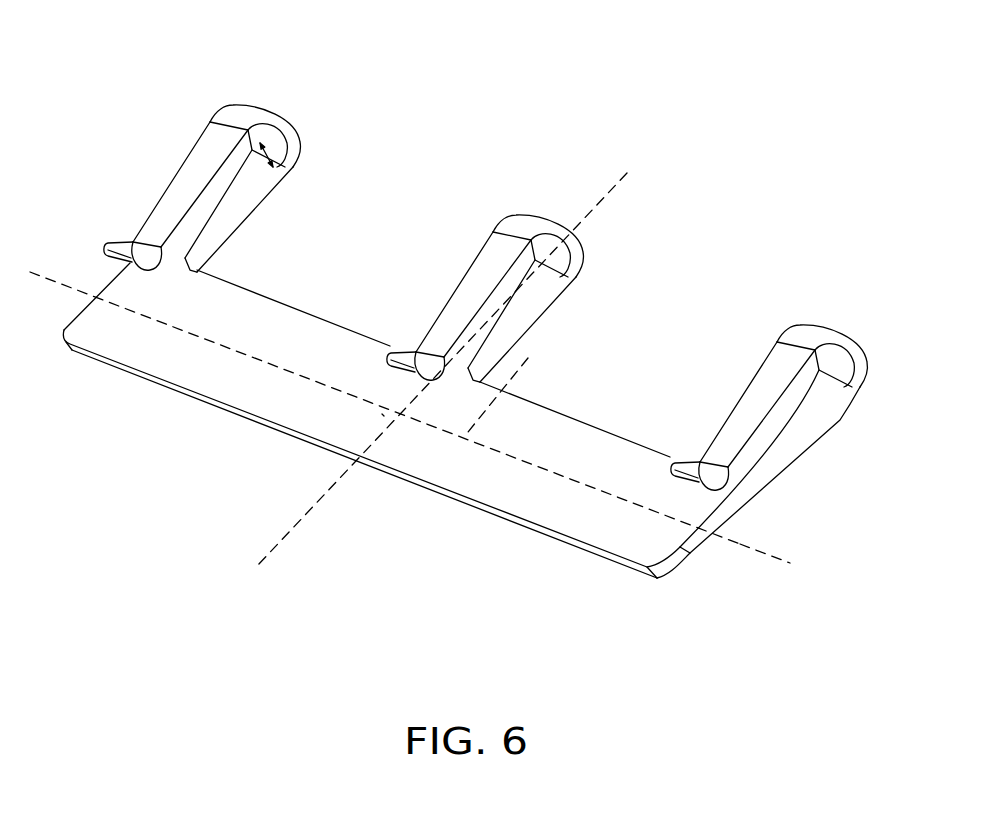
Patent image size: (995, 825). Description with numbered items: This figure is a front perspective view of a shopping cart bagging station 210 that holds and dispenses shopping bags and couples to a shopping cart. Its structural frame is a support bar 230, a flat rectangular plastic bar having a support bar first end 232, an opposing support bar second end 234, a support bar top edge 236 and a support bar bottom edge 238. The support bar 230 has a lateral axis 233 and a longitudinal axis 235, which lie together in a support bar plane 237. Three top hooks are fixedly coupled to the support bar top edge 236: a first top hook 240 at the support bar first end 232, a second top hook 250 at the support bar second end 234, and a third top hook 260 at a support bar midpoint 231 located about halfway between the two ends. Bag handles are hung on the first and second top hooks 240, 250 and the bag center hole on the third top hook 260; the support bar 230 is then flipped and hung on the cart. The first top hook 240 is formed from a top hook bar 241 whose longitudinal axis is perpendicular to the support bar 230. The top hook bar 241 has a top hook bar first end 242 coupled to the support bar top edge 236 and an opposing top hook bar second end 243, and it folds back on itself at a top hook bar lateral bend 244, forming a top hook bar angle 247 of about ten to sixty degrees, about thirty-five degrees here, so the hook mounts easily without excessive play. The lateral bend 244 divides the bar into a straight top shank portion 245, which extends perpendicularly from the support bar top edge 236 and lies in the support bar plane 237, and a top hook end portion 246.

The shopping cart bagging station 210 is at (585, 118).
The support bar 230 is at (267, 313).
The support bar midpoint 231 is at (378, 417).
The support bar first end 232 is at (78, 233).
The lateral axis 233 is at (289, 532).
The support bar second end 234 is at (720, 556).
The longitudinal axis 235 is at (750, 548).
The support bar top edge 236 is at (577, 418).
The support bar plane 237 is at (522, 363).
The support bar bottom edge 238 is at (487, 508).
The first top hook 240 is at (332, 77).
The top hook bar 241 is at (125, 138).
The top hook bar first end 242 is at (168, 278).
The top hook bar second end 243 is at (117, 250).
The top hook bar lateral bend 244 is at (280, 117).
The top shank portion 245 is at (237, 191).
The top hook end portion 246 is at (198, 162).
The top hook bar angle 247 is at (285, 152).
The second top hook 250 is at (803, 332).
The third top hook 260 is at (528, 223).